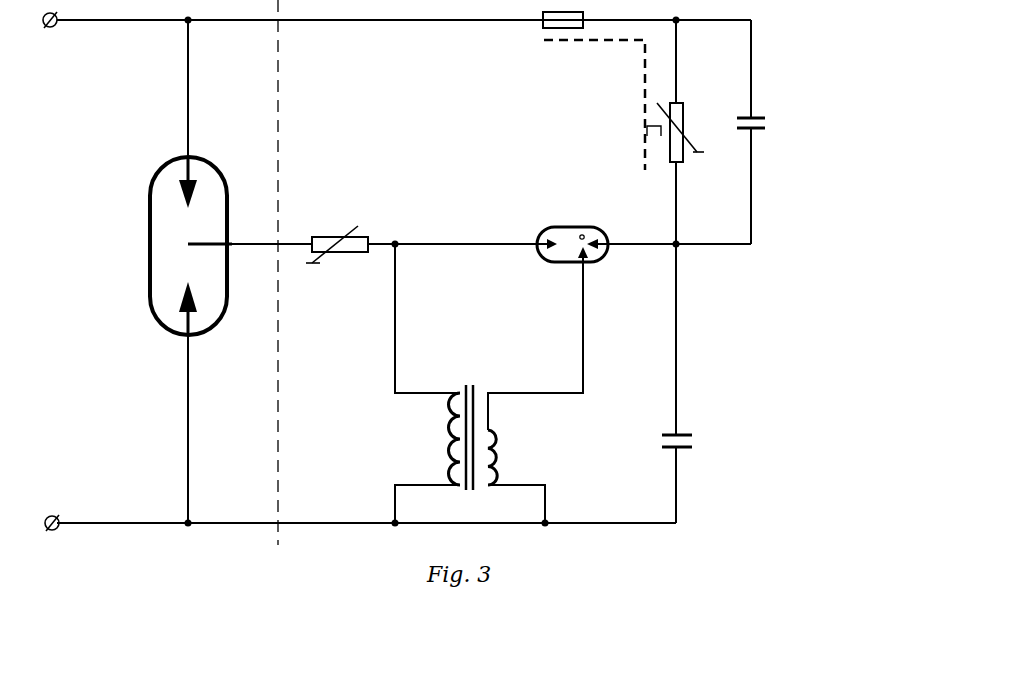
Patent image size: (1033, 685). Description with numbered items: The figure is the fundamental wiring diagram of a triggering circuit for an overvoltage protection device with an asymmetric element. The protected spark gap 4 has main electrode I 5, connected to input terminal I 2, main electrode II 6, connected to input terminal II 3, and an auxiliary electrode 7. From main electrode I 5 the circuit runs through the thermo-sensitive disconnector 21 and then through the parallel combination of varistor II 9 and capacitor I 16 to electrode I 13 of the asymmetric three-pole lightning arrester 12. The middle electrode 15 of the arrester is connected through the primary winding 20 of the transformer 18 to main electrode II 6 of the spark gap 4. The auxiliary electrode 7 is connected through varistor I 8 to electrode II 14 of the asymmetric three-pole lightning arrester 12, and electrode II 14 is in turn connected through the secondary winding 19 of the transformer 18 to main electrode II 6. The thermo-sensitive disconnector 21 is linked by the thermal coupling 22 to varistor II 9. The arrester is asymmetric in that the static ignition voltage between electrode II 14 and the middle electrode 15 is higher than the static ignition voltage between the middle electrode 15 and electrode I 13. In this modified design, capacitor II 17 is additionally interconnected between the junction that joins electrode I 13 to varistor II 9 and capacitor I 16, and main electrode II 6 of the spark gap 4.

The input terminal I 2 is at (94, 59).
The input terminal II 3 is at (102, 484).
The spark gap 4 is at (147, 248).
The main electrode I 5 is at (129, 174).
The main electrode II 6 is at (131, 349).
The auxiliary electrode 7 is at (280, 157).
The varistor I 8 is at (376, 175).
The varistor II 9 is at (739, 88).
The asymmetric three-pole lightning arrester 12 is at (584, 209).
The electrode I 13 is at (625, 301).
The electrode II 14 is at (487, 210).
The middle electrode 15 is at (504, 269).
The capacitor I 16 is at (793, 181).
The capacitor II 17 is at (756, 363).
The transformer 18 is at (513, 393).
The secondary winding 19 is at (381, 439).
The primary winding 20 is at (564, 458).
The thermo-sensitive disconnector 21 is at (504, 82).
The thermal coupling 22 is at (571, 105).